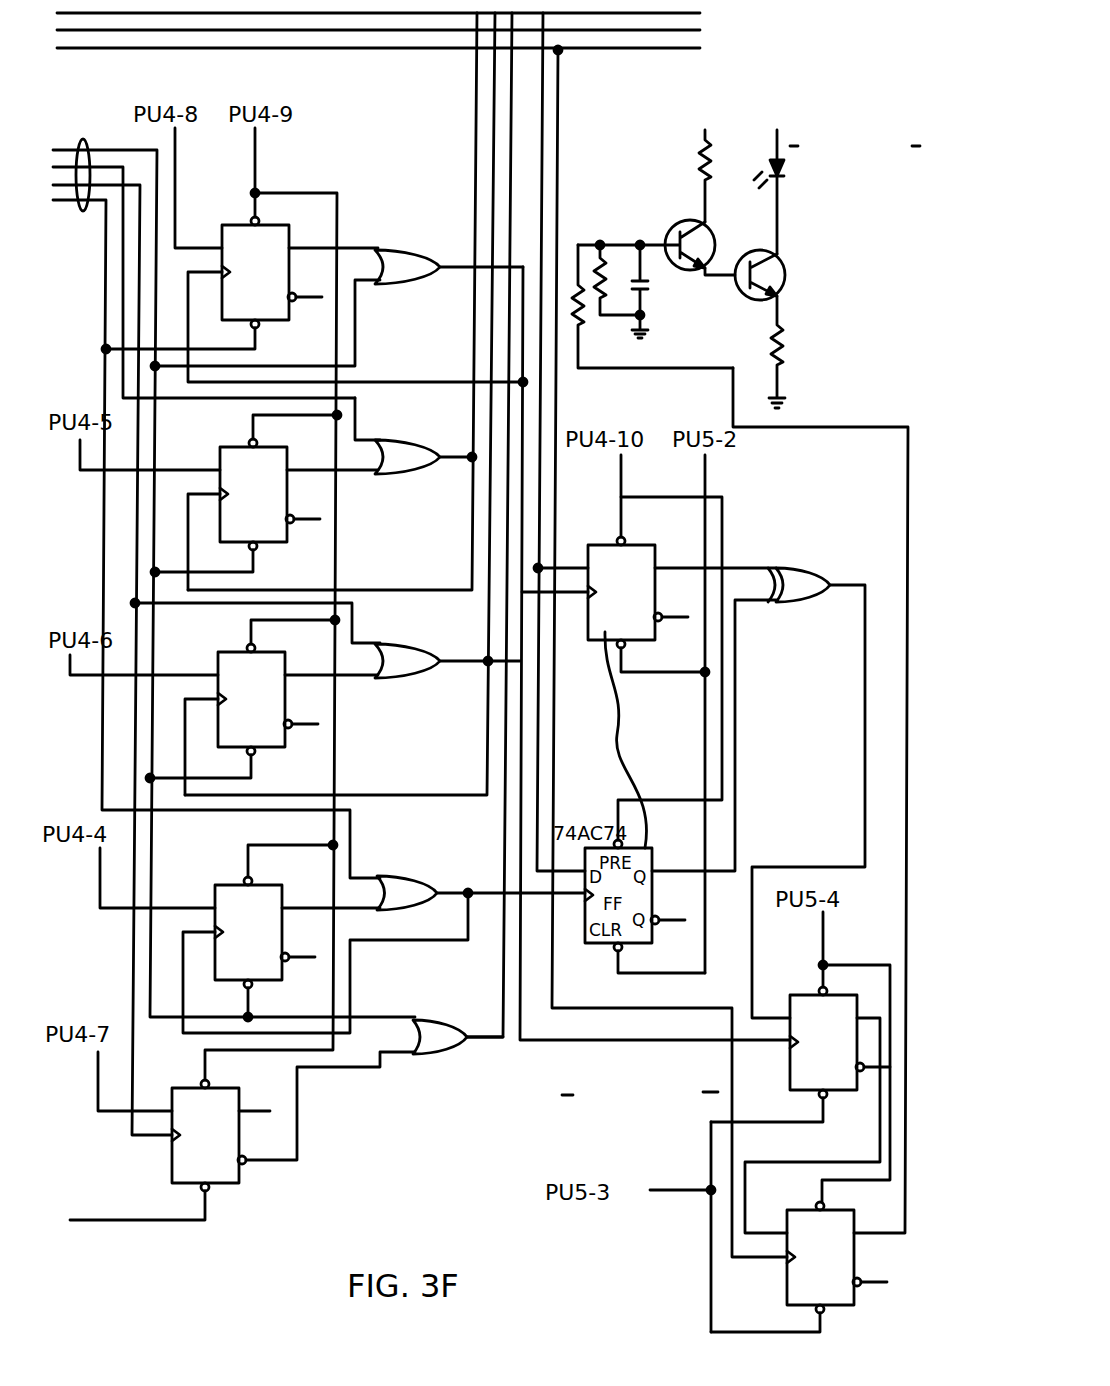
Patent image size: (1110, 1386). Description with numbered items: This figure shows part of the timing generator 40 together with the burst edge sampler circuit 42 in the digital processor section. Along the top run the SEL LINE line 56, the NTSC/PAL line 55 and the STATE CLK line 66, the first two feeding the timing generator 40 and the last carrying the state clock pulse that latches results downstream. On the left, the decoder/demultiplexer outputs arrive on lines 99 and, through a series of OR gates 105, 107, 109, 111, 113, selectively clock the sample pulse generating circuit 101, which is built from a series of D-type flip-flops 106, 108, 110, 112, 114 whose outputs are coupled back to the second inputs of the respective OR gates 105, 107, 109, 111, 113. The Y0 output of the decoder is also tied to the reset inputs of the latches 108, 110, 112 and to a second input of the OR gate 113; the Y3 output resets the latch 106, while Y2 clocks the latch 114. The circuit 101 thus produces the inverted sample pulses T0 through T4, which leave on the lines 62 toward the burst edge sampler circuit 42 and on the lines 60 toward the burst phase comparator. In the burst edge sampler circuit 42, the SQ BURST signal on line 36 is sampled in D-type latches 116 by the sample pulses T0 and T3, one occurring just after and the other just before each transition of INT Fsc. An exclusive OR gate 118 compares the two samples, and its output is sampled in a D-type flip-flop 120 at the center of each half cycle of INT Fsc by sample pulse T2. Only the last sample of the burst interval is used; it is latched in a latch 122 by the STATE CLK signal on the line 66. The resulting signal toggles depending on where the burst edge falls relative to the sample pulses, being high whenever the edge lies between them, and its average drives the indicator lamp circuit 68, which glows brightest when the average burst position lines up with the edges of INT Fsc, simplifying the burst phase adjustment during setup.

The SQ BURST line 36 is at (545, 142).
The timing generator 40 is at (110, 922).
The burst edge sampler circuit 42 is at (612, 1018).
The NTSC/PAL line 55 is at (253, 30).
The SEL LINE line 56 is at (353, 15).
The sample pulse lines for burst phase comparator 60 is at (512, 150).
The sample pulse lines for burst edge sampler 62 is at (522, 596).
The STATE CLK line 66 is at (178, 48).
The indicator lamp circuit 68 is at (701, 312).
The decoder/demultiplexer output lines 99 is at (86, 140).
The sample pulse generating circuit 101 is at (123, 492).
The OR gate 105 is at (408, 285).
The D-type flip-flop 106 is at (275, 318).
The OR gate 107 is at (410, 474).
The D-type flip-flop 108 is at (273, 540).
The OR gate 109 is at (410, 678).
The D-type flip-flop 110 is at (272, 745).
The OR gate 111 is at (423, 884).
The D-type flip-flop 112 is at (270, 978).
The OR gate 113 is at (450, 1047).
The D-type flip-flop 114 is at (237, 1180).
The D-type latches 116 is at (640, 735).
The exclusive OR gate 118 is at (800, 603).
The D-type flip-flop 120 is at (800, 1085).
The latch 122 is at (790, 1290).